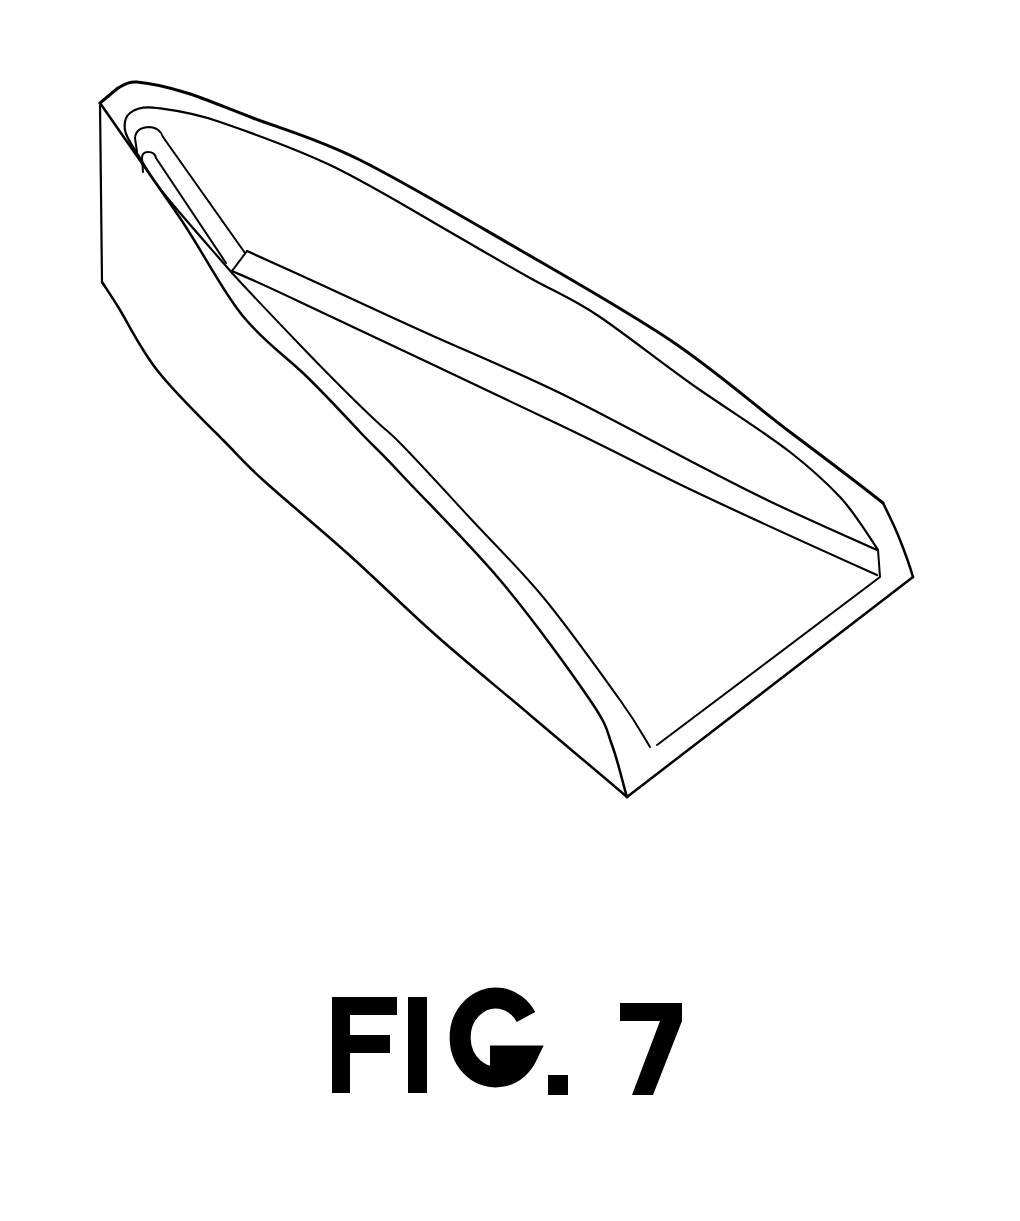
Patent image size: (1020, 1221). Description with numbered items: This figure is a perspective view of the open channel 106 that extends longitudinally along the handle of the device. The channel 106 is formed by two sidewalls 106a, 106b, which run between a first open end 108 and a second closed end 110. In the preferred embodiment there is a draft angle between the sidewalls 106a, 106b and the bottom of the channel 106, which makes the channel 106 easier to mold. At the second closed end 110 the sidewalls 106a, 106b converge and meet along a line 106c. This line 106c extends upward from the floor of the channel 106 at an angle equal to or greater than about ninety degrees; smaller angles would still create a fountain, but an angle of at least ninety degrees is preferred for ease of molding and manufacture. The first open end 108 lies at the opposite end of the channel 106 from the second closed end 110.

The second closed end 110 is at (102, 102).
The open channel 106 is at (627, 527).
The sidewall 106a is at (460, 223).
The sidewall 106b is at (352, 532).
The line 106c is at (153, 167).
The first open end 108 is at (767, 660).